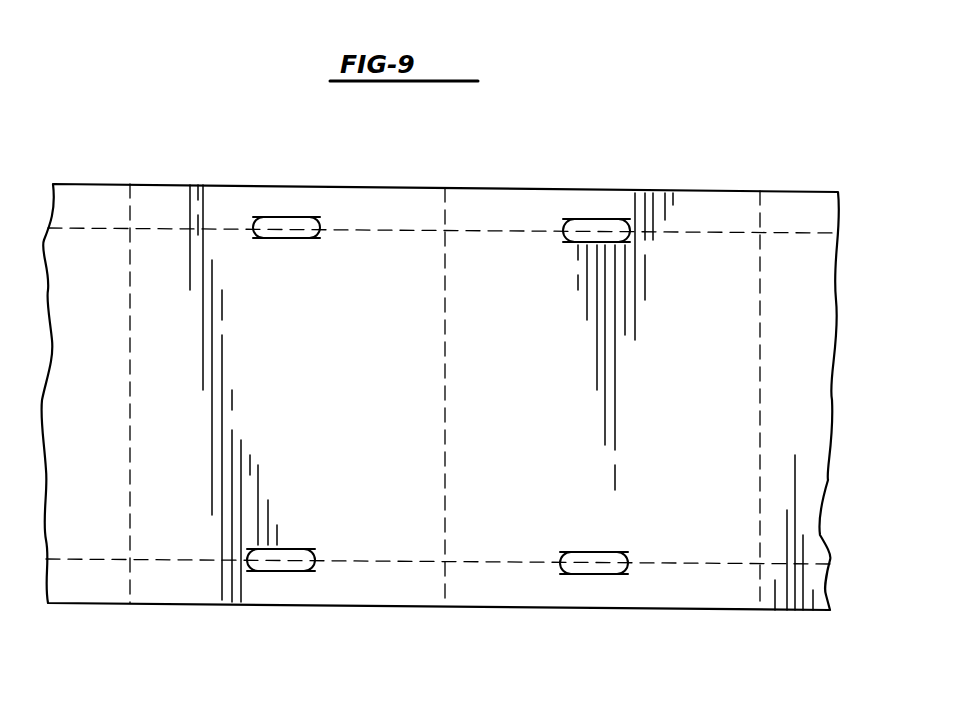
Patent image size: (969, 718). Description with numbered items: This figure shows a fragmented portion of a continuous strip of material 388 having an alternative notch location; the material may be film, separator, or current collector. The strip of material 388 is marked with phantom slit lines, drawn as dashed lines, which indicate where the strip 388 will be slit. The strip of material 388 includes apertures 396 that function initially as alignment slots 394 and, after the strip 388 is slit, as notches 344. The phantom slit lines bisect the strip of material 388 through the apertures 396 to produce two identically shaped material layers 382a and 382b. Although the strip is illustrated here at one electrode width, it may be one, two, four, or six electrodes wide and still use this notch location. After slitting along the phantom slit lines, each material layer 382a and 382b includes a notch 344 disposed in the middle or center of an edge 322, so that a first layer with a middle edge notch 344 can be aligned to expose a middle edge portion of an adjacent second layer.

The continuous strip of material 388 is at (508, 145).
The edge 322 is at (240, 229).
The notch 344 is at (305, 238).
The alignment slot 394 is at (304, 217).
The aperture 396 is at (268, 216).
The material layer 382a is at (636, 402).
The material layer 382b is at (322, 395).